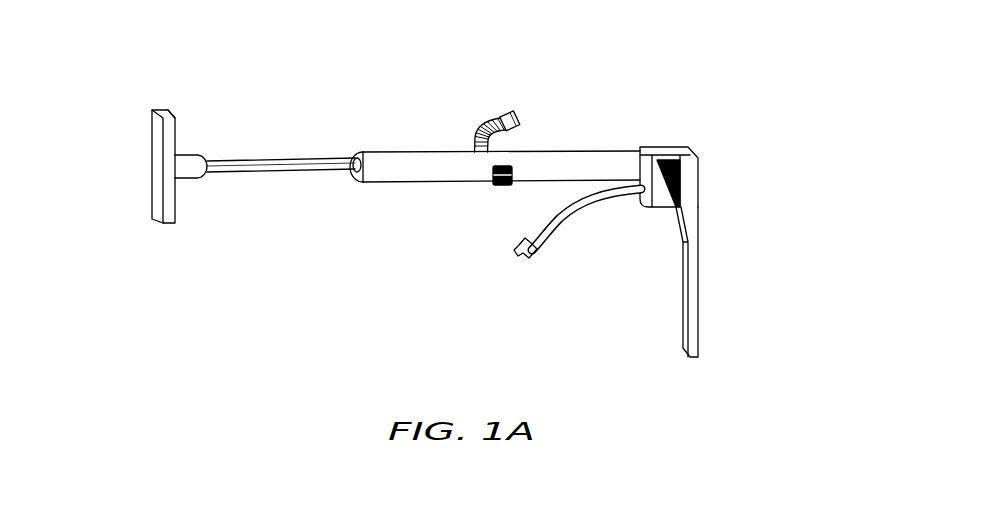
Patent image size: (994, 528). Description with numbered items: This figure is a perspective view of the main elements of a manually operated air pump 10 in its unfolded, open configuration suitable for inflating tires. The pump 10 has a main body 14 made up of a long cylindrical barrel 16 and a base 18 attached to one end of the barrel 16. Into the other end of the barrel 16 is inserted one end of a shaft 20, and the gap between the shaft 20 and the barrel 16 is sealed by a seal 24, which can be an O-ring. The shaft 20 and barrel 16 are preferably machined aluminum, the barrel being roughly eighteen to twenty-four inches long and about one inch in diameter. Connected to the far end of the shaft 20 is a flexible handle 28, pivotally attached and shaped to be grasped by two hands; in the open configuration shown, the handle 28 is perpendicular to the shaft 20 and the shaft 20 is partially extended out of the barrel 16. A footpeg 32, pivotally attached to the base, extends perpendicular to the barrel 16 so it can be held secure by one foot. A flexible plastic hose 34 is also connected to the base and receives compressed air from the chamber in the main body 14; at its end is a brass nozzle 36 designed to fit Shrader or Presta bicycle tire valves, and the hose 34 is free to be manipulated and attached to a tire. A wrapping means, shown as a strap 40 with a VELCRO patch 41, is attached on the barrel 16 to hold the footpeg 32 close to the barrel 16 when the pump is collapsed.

The air pump 10 is at (752, 170).
The main body 14 is at (480, 188).
The barrel 16 is at (403, 157).
The base 18 is at (672, 148).
The shaft 20 is at (298, 168).
The seal 24 is at (353, 178).
The flexible handle 28 is at (151, 175).
The footpeg 32 is at (692, 312).
The flexible plastic hose 34 is at (560, 230).
The nozzle 36 is at (493, 242).
The strap 40 is at (489, 120).
The VELCRO patch 41 is at (518, 116).